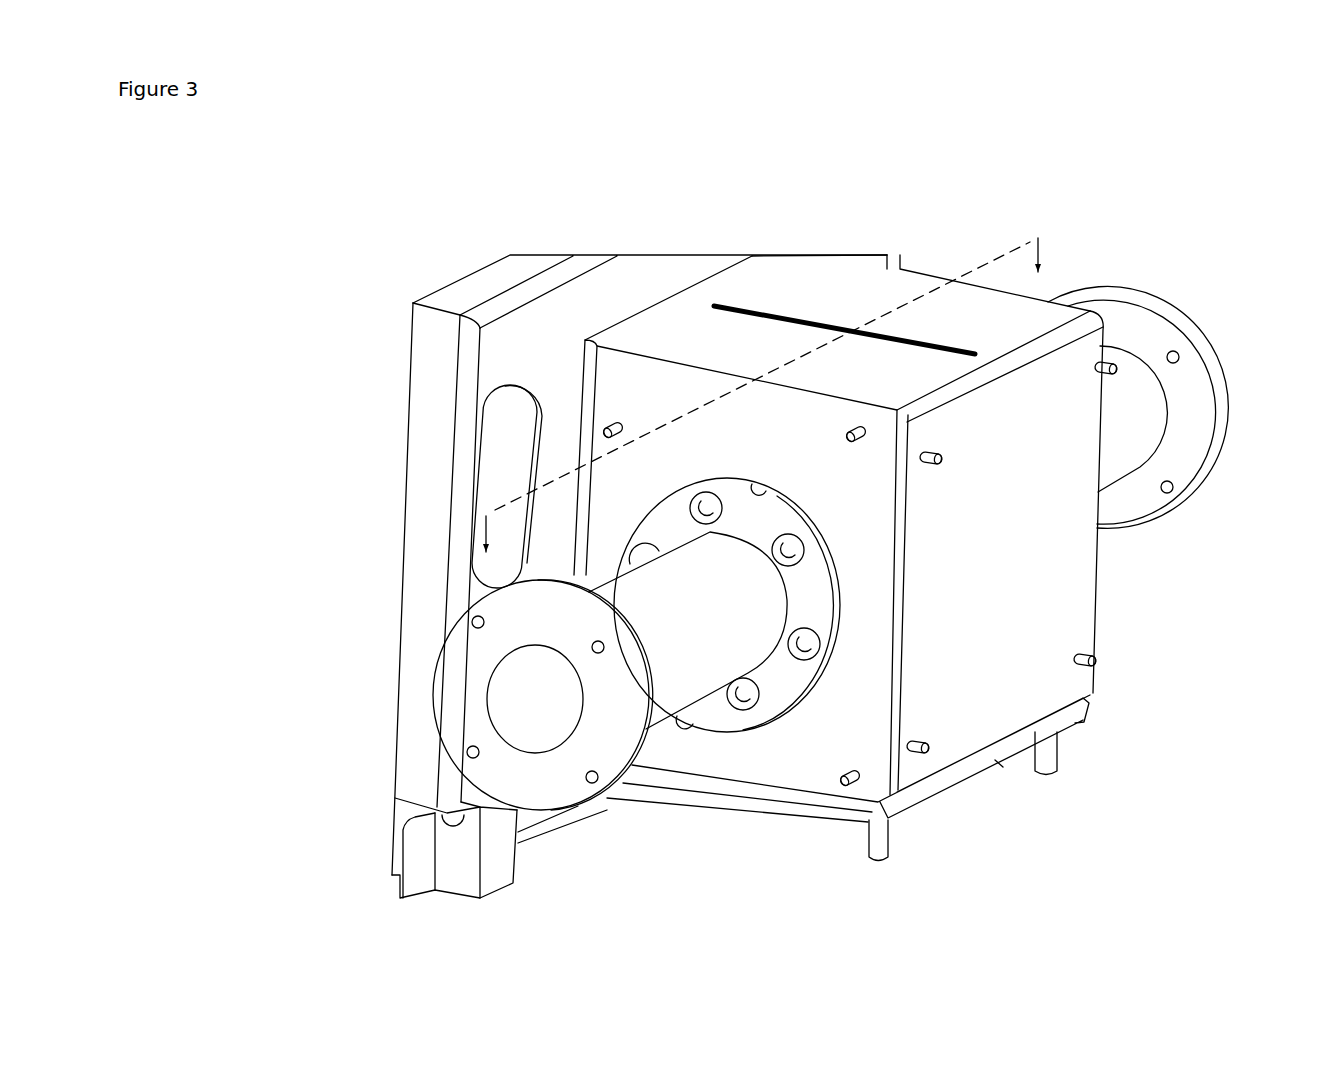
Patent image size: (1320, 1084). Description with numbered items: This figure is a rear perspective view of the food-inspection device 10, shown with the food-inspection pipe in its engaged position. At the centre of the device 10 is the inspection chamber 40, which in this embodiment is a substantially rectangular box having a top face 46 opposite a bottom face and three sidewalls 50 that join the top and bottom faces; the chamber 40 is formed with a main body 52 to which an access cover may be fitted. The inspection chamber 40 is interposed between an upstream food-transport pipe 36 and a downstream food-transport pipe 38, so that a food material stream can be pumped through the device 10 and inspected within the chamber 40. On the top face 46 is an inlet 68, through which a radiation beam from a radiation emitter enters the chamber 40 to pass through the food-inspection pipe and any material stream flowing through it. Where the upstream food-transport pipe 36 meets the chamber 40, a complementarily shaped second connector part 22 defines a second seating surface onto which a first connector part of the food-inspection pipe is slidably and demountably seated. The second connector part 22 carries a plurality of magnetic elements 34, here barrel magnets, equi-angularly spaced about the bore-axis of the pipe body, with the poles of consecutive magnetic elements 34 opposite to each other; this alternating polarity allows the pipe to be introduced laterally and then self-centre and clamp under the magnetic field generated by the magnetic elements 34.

The food-inspection device 10 is at (386, 256).
The second connector part 22 is at (832, 633).
The magnetic element 34 is at (703, 497).
The upstream food-transport pipe 36 is at (652, 630).
The downstream food-transport pipe 38 is at (1127, 447).
The inspection chamber 40 is at (1037, 293).
The top face 46 is at (1037, 320).
The sidewall 50 is at (1068, 563).
The main body 52 is at (917, 267).
The inlet 68 is at (797, 316).